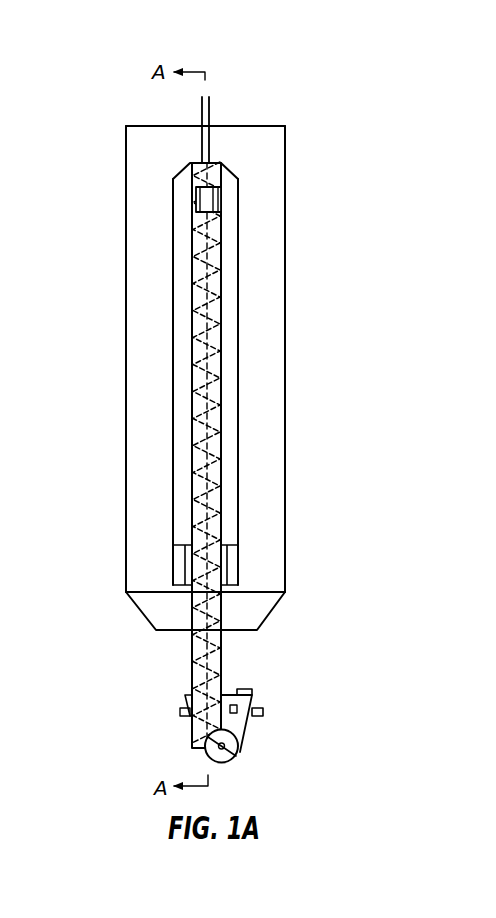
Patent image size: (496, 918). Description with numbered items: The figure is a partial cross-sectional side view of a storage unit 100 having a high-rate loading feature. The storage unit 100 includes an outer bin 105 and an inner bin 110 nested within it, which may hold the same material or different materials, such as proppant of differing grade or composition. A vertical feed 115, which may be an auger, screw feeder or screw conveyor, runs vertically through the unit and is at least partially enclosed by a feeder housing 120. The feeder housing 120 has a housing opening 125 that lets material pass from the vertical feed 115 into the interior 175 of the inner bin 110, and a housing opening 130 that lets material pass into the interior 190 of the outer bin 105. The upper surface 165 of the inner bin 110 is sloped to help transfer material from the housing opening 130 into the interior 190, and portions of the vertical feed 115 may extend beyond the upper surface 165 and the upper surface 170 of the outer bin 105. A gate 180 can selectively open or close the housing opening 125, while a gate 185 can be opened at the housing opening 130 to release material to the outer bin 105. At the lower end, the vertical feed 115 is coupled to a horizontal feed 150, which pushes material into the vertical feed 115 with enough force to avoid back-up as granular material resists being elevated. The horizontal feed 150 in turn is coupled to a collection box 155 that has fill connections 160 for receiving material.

The storage unit 100 is at (364, 96).
The outer bin 105 is at (286, 257).
The inner bin 110 is at (238, 234).
The vertical feed 115 is at (232, 668).
The feeder housing 120 is at (222, 441).
The housing opening 125 is at (222, 205).
The housing opening 130 is at (221, 162).
The horizontal feed 150 is at (243, 757).
The collection box 155 is at (258, 701).
The fill connections 160 is at (264, 713).
The upper surface 165 is at (182, 170).
The upper surface 170 is at (148, 125).
The interior 175 is at (238, 482).
The gate 180 is at (222, 192).
The gate 185 is at (216, 158).
The interior 190 is at (254, 342).